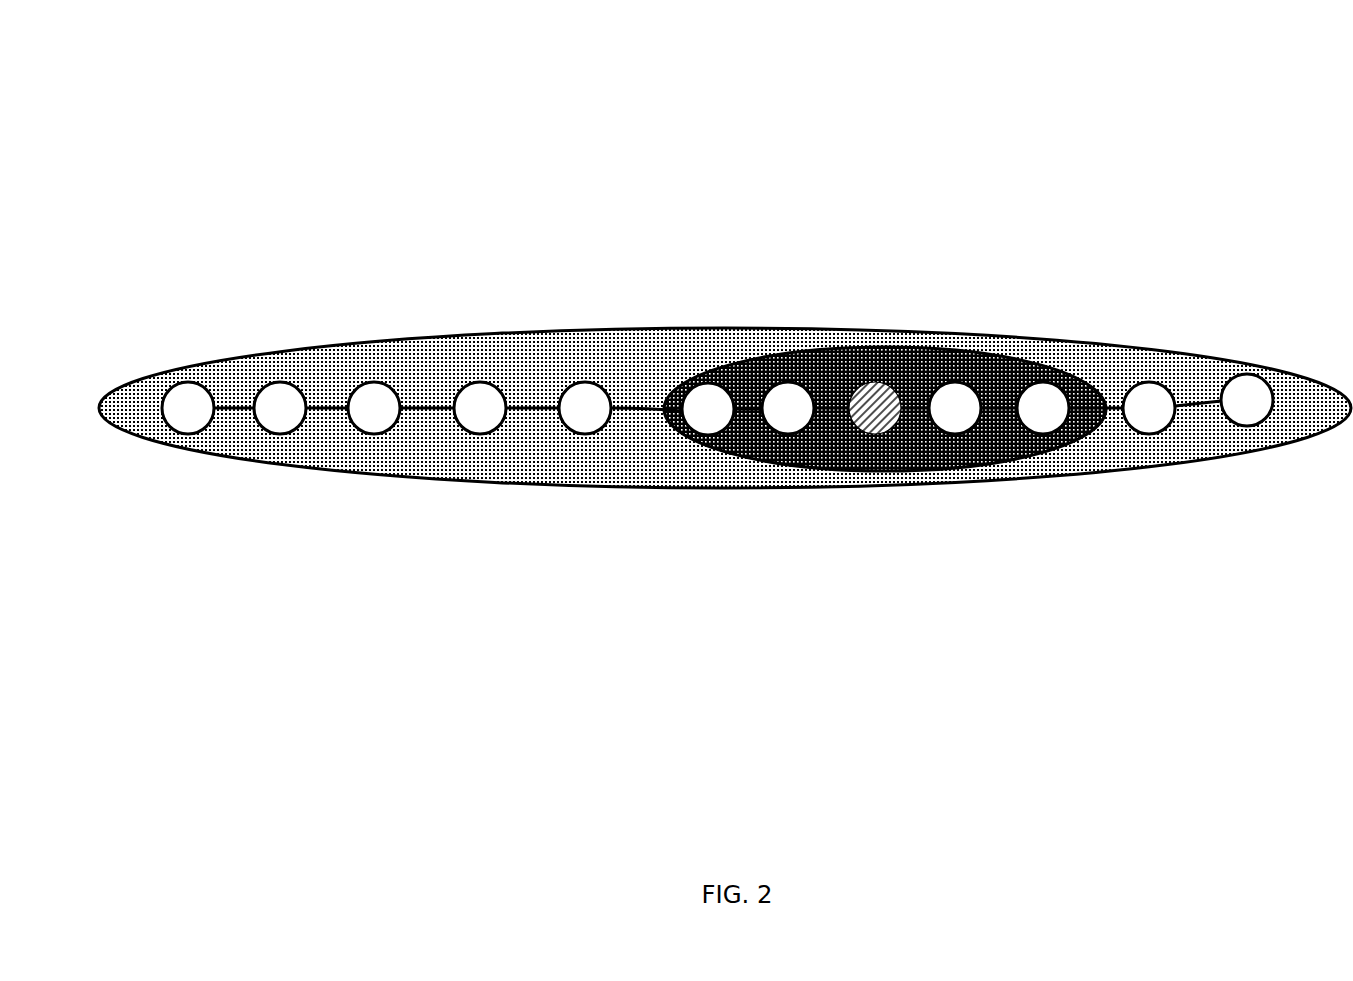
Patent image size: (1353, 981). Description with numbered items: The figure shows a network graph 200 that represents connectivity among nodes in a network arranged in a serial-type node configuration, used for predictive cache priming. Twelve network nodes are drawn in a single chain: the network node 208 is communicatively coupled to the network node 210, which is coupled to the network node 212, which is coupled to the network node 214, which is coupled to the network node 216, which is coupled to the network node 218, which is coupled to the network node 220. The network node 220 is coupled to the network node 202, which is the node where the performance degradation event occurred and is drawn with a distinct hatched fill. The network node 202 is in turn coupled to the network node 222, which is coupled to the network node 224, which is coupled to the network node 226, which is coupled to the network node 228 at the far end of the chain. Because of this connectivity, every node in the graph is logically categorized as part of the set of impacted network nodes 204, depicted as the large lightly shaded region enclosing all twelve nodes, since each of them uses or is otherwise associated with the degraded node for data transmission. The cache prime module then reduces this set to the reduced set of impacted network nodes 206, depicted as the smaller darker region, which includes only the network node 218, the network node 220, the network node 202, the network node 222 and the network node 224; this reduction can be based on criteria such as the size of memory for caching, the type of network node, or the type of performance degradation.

The network graph 200 is at (269, 113).
The network node 202 is at (878, 348).
The set of impacted network nodes 204 is at (576, 338).
The reduced set of impacted network nodes 206 is at (876, 472).
The network node 208 is at (173, 418).
The network node 210 is at (265, 418).
The network node 212 is at (359, 418).
The network node 214 is at (465, 418).
The network node 216 is at (570, 418).
The network node 218 is at (693, 419).
The network node 220 is at (773, 418).
The network node 222 is at (940, 418).
The network node 224 is at (1028, 418).
The network node 226 is at (1134, 418).
The network node 228 is at (1232, 410).